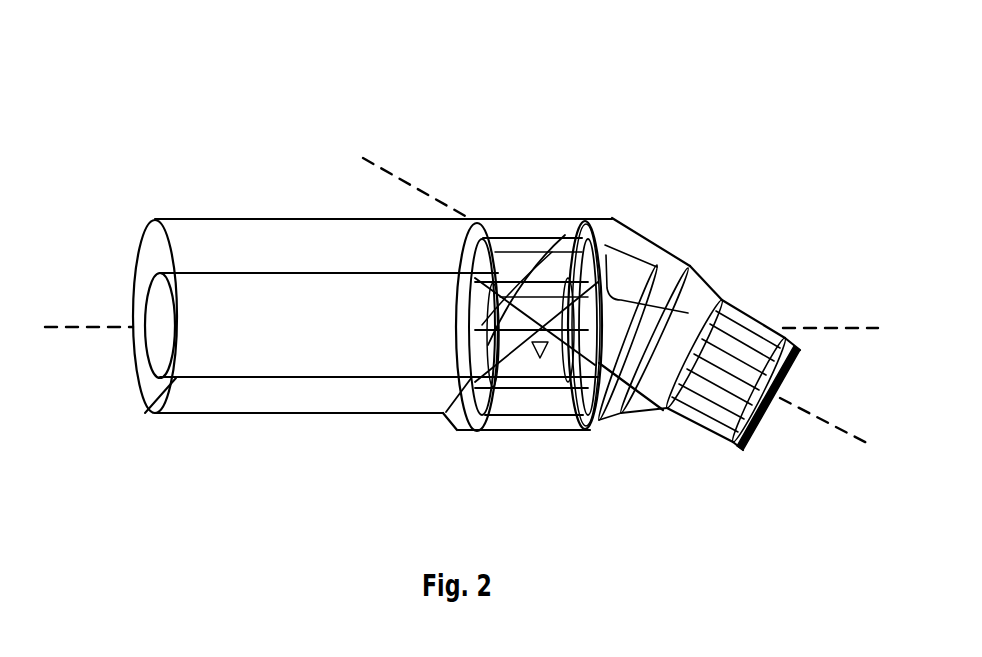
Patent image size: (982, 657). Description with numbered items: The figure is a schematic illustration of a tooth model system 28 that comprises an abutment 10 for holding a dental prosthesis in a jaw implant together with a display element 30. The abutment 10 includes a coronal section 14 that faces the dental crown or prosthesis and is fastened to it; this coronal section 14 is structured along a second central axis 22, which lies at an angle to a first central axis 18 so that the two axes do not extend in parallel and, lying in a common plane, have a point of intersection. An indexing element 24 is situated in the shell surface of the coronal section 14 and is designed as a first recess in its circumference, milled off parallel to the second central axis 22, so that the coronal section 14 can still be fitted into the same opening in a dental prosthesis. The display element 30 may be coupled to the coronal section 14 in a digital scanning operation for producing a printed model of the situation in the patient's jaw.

The abutment 10 is at (697, 270).
The coronal section 14 is at (583, 443).
The first central axis 18 is at (415, 185).
The second central axis 22 is at (83, 328).
The indexing element 24 is at (539, 330).
The tooth model system 28 is at (621, 206).
The display element 30 is at (372, 280).